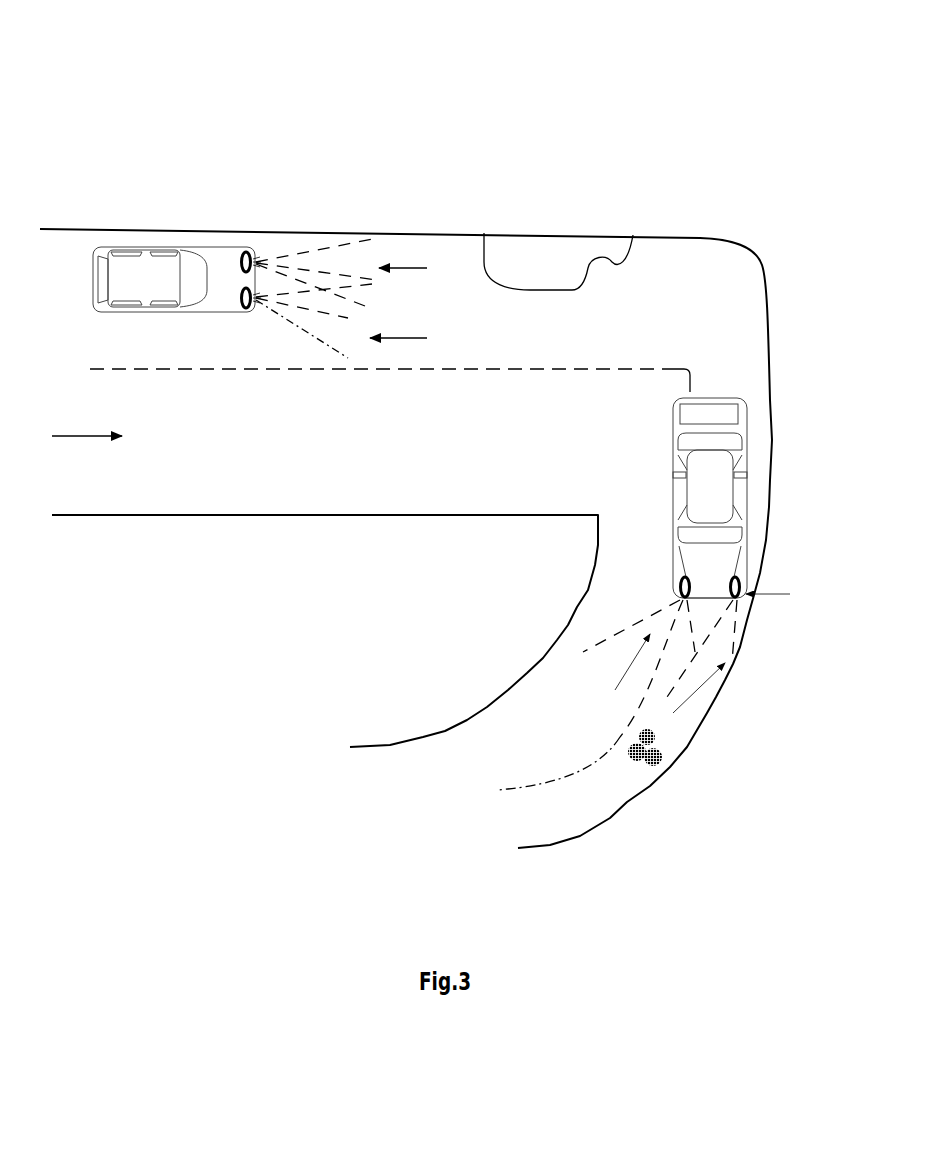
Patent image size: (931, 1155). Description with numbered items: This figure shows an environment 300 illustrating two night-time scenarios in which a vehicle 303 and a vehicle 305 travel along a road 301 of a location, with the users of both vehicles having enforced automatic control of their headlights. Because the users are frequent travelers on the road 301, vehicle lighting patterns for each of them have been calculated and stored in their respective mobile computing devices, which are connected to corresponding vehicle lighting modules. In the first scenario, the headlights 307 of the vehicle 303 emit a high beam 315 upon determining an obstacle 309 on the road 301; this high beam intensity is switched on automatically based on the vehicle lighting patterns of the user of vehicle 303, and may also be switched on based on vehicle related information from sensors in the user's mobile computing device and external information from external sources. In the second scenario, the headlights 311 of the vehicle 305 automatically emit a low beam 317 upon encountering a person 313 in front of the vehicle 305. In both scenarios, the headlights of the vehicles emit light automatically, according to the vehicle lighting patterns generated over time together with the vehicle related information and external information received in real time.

The environment 300 is at (523, 82).
The road 301 is at (106, 436).
The vehicle 303 is at (174, 279).
The vehicle 305 is at (710, 498).
The headlights 307 is at (240, 289).
The obstacle 309 is at (632, 234).
The headlights 311 is at (690, 571).
The person 313 is at (665, 750).
The high beam 315 is at (369, 298).
The low beam 317 is at (617, 695).